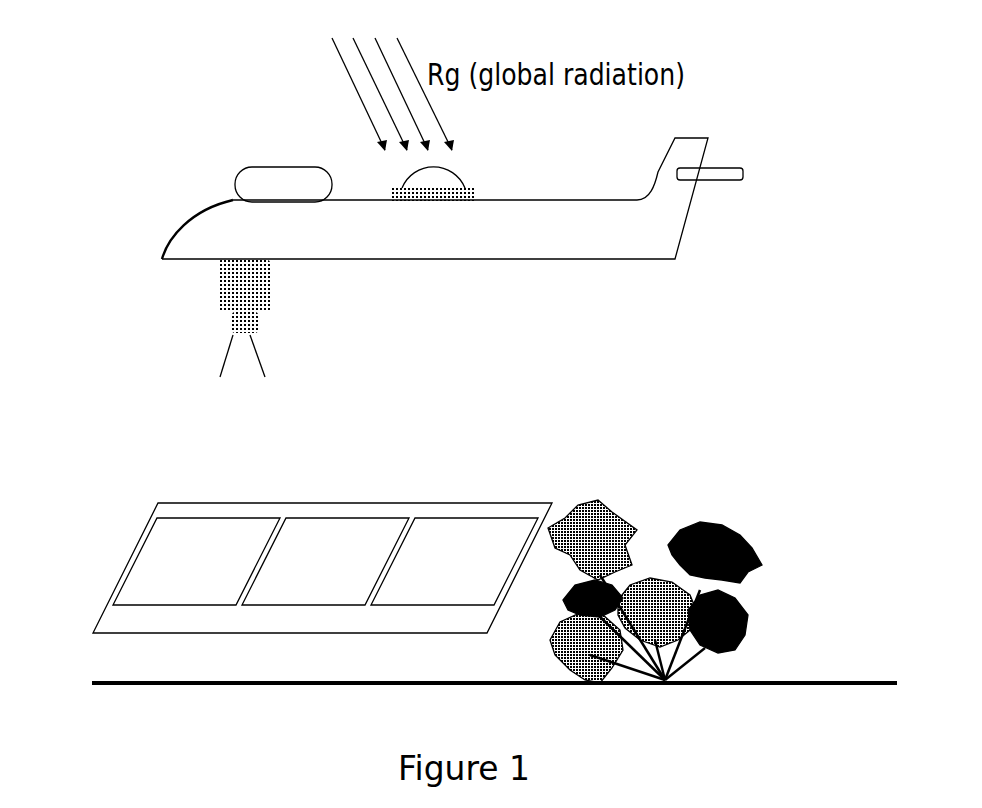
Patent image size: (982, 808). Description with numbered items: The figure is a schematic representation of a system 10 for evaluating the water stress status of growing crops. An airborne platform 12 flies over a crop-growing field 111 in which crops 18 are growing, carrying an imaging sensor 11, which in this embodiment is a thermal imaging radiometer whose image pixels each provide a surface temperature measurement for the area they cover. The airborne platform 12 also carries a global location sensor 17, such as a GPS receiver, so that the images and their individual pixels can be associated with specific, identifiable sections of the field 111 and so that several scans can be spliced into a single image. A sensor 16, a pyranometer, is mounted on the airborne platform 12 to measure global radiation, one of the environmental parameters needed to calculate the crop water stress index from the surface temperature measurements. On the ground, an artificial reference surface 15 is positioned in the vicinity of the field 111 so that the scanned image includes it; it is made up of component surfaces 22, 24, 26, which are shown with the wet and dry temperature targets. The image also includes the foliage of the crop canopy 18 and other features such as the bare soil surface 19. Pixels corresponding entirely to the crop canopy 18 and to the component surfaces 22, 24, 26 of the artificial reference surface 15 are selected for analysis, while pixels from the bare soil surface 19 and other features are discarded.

The system 10 is at (762, 114).
The imaging sensor 11 is at (235, 283).
The airborne platform 12 is at (640, 225).
The artificial reference surface 15 is at (207, 503).
The sensor 16 is at (452, 183).
The global location sensor 17 is at (250, 182).
The crops 18 is at (742, 562).
The bare soil surface 19 is at (737, 680).
The component surface 22 is at (452, 592).
The component surface 24 is at (192, 590).
The component surface 26 is at (330, 592).
The field 111 is at (605, 443).